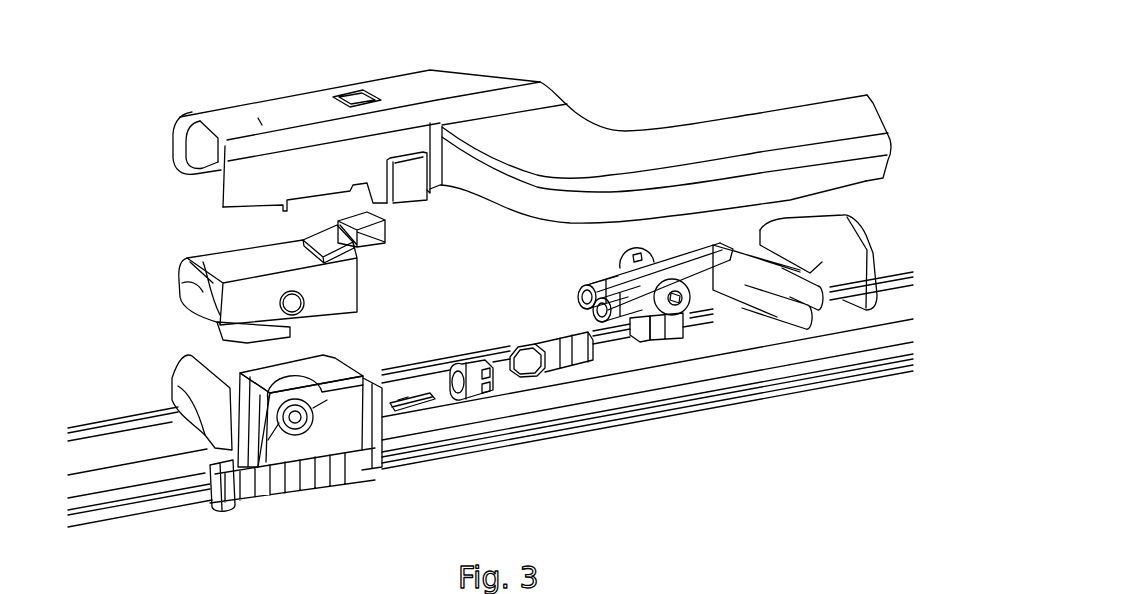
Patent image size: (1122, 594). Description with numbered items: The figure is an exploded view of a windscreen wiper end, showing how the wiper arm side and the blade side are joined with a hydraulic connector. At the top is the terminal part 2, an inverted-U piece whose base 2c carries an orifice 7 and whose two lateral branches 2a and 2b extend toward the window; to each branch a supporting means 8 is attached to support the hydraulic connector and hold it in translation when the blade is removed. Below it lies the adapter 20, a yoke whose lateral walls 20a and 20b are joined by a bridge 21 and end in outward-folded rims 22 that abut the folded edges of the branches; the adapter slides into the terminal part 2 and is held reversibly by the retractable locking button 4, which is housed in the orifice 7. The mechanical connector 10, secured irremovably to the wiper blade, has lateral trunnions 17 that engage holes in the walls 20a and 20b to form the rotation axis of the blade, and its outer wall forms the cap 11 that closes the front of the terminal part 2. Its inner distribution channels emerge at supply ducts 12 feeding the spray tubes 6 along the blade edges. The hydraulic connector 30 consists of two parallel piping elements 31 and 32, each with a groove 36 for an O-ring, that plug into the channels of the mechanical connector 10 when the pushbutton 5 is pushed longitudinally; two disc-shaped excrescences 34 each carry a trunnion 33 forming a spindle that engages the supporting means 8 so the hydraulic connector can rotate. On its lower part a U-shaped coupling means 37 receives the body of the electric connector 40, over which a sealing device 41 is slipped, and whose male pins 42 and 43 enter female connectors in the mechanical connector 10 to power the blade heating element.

The terminal part 2 is at (493, 122).
The lateral branch 2a is at (183, 150).
The lateral branch 2b is at (223, 203).
The base 2c is at (262, 118).
The retractable locking button 4 is at (380, 216).
The pushbutton 5 is at (832, 236).
The spray tube 6 is at (137, 500).
The orifice 7 is at (366, 97).
The supporting means 8 is at (410, 186).
The mechanical connector 10 is at (231, 462).
The cap 11 is at (187, 379).
The supply duct 12 is at (240, 498).
The trunnion 17 is at (300, 435).
The adapter 20 is at (248, 289).
The lateral wall 20a is at (180, 293).
The lateral wall 20b is at (218, 327).
The bridge 21 is at (263, 257).
The rim 22 is at (262, 345).
The hydraulic connector 30 is at (657, 355).
The piping element 31 is at (578, 293).
The piping element 32 is at (594, 309).
The trunnion 33 is at (707, 310).
The excrescence 34 is at (628, 262).
The groove 36 is at (637, 315).
The coupling means 37 is at (668, 342).
The electric connector 40 is at (546, 378).
The sealing device 41 is at (478, 401).
The male pin 42 is at (404, 400).
The male pin 43 is at (415, 412).